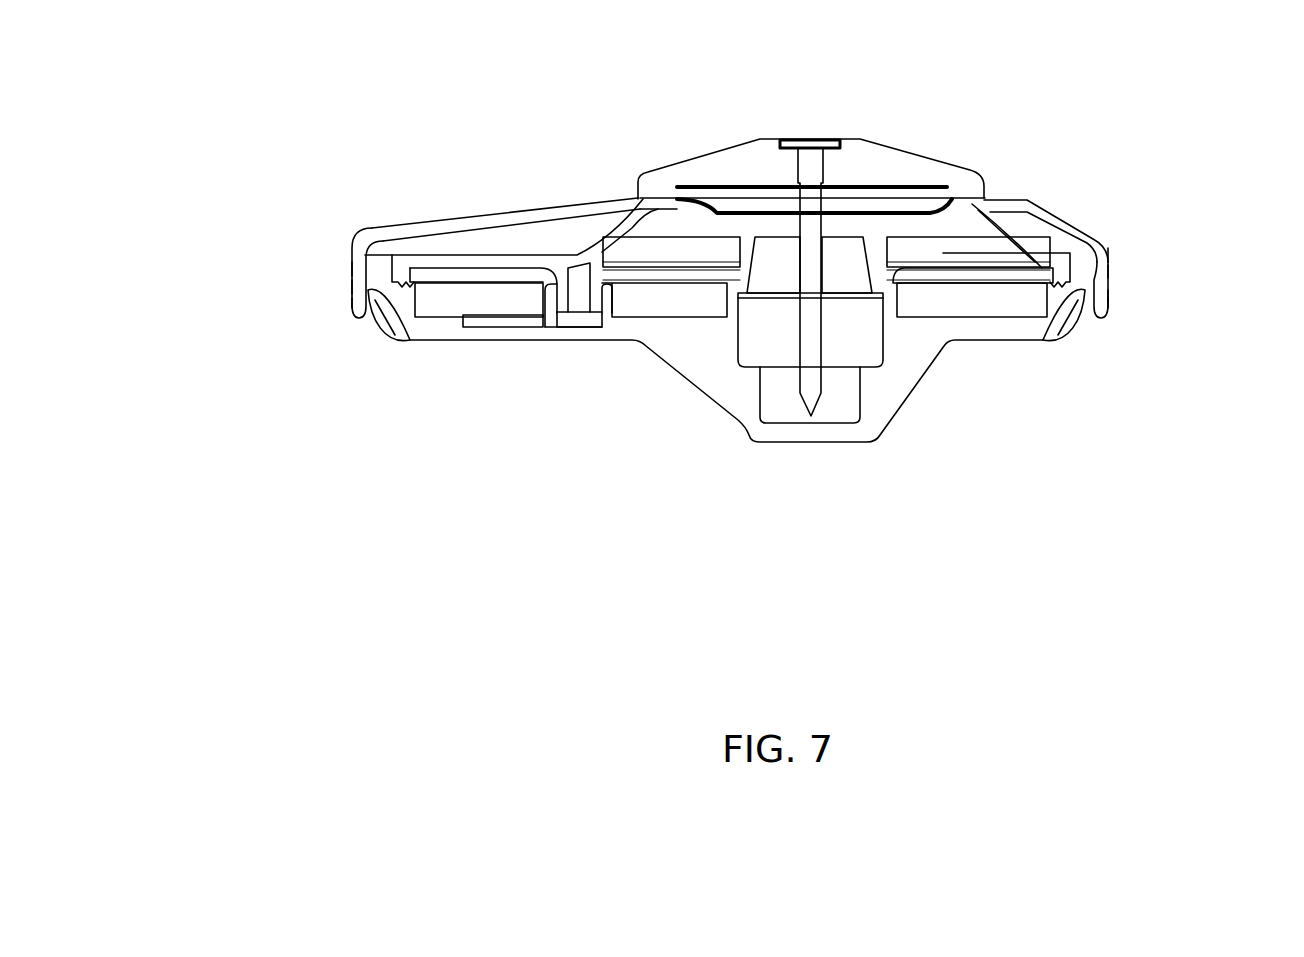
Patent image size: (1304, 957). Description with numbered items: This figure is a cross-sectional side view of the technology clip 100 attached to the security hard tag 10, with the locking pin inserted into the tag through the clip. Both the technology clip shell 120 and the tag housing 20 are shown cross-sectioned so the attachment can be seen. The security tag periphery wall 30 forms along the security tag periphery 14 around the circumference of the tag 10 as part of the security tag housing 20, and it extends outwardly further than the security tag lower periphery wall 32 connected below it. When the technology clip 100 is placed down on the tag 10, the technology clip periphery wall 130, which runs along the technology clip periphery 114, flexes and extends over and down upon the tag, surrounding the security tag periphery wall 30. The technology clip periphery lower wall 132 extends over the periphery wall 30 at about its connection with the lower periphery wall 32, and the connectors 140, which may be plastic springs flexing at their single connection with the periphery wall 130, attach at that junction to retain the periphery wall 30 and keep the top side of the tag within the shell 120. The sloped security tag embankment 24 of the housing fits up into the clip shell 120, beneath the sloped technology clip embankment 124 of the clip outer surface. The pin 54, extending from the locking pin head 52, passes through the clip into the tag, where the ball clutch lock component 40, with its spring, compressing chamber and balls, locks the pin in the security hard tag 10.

The security hard tag 10 is at (713, 338).
The security tag periphery 14 is at (383, 335).
The security tag housing 20 is at (880, 407).
The security tag embankment 24 is at (1005, 240).
The security tag periphery wall 30 is at (375, 272).
The security tag lower periphery wall 32 is at (388, 332).
The lock component 40 is at (840, 338).
The locking pin head 52 is at (743, 157).
The pin 54 is at (812, 203).
The technology clip 100 is at (736, 188).
The technology clip periphery 114 is at (350, 285).
The technology clip shell 120 is at (500, 235).
The technology clip embankment 124 is at (1043, 210).
The technology clip periphery wall 130 is at (350, 272).
The technology clip periphery lower wall 132 is at (1107, 307).
The connectors 140 is at (353, 305).